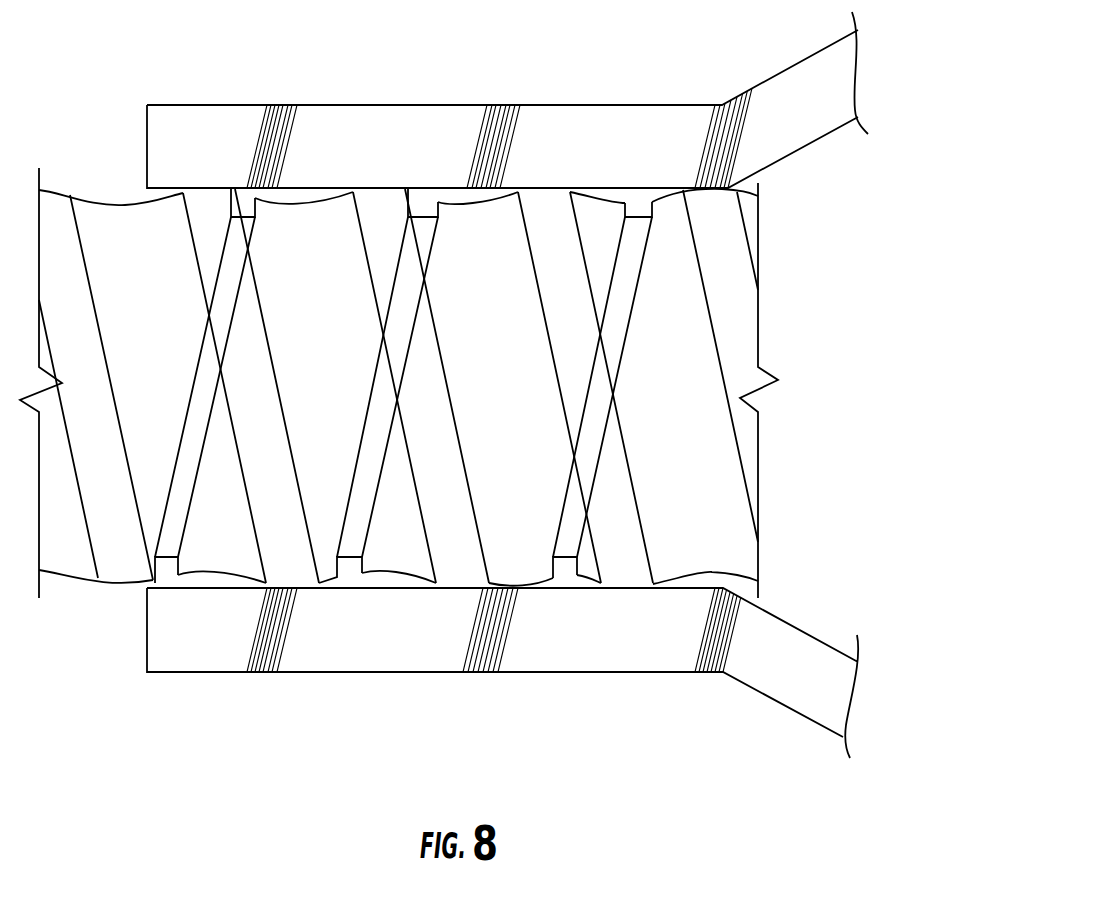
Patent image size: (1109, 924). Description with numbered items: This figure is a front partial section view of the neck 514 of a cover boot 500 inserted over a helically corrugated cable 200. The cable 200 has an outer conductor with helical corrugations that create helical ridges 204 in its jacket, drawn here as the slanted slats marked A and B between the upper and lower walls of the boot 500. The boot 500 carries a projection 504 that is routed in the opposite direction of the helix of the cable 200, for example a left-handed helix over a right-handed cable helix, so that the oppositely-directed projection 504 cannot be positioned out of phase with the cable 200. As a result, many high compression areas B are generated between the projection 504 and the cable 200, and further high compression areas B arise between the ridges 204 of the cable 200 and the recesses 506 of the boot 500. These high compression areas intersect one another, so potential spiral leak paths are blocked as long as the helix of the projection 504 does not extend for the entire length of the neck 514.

The cable 200 is at (477, 401).
The helical ridges 204 is at (550, 203).
The boot 500 is at (710, 706).
The projection 504 is at (569, 576).
The recesses 506 is at (522, 590).
The neck 514 is at (348, 648).